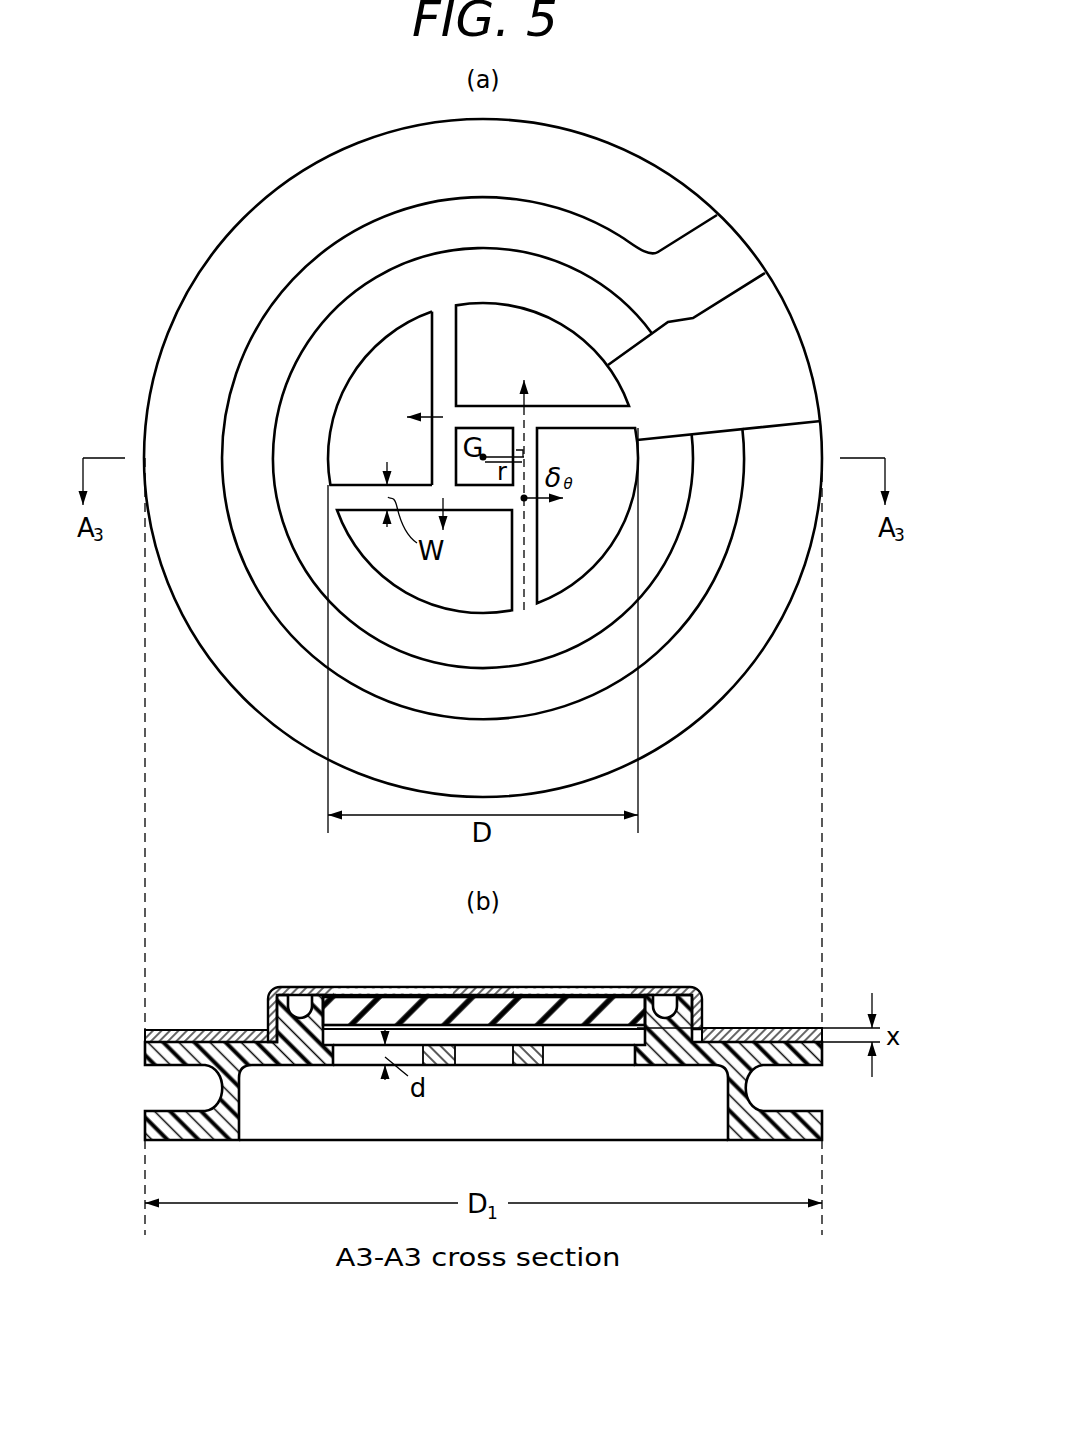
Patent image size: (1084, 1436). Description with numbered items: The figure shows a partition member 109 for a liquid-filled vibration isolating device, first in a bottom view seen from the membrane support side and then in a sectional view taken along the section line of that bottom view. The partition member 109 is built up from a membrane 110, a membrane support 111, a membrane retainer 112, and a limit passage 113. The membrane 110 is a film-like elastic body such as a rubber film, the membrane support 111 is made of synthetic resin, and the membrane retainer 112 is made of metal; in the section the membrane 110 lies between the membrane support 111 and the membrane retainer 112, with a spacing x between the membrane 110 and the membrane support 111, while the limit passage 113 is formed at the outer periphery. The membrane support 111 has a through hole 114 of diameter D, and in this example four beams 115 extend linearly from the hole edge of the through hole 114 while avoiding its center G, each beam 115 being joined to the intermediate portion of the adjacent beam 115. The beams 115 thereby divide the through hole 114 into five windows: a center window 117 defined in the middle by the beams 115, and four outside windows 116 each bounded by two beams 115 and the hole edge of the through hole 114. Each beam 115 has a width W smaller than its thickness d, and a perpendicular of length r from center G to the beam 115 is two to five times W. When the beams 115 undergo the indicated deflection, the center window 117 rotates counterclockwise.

The partition member 109 is at (824, 338).
The membrane 110 is at (568, 539).
The membrane support 111 is at (727, 342).
The membrane retainer 112 is at (663, 985).
The limit passage 113 is at (190, 1083).
The through hole 114 is at (538, 307).
The beam 115 is at (432, 367).
The outside window 116 is at (368, 442).
The center window 117 is at (475, 470).